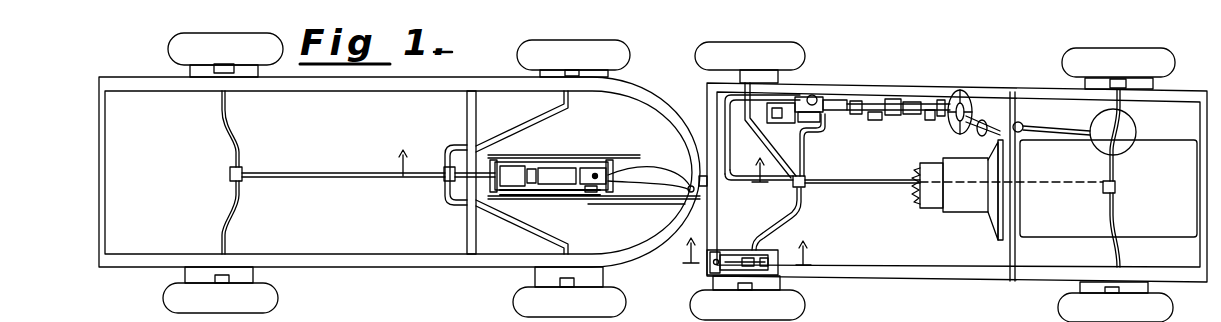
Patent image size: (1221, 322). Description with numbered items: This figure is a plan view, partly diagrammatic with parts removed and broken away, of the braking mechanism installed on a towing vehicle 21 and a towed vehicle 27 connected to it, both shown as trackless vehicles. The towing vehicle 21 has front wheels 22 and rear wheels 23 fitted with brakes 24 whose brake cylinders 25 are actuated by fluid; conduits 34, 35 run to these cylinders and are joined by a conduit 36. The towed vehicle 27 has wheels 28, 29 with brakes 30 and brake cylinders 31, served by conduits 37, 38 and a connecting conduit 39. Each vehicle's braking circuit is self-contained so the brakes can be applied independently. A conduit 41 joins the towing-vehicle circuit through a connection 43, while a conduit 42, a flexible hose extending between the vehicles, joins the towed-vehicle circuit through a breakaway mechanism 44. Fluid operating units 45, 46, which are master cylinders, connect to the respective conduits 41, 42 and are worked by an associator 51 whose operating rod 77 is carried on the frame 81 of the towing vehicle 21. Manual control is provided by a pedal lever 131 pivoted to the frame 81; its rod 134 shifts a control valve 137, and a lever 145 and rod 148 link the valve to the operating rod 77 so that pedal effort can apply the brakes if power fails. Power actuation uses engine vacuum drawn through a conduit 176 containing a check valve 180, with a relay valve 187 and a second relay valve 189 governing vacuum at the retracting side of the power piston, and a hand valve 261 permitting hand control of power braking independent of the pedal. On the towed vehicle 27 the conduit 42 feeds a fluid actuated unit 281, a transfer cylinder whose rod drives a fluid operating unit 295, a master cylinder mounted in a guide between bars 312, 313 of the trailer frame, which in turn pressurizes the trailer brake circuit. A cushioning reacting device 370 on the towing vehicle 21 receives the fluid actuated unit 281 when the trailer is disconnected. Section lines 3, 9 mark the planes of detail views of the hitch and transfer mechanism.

The section line 3- 3 is at (751, 243).
The section line 9- 9 is at (583, 162).
The towing vehicle 21 is at (1012, 77).
The front wheels 22 is at (1168, 58).
The rear wheels 23 is at (800, 58).
The brakes 24 is at (1153, 85).
The brake cylinders 25 is at (1130, 90).
The towed vehicle 27 is at (478, 80).
The wheels 28 is at (618, 60).
The wheels 29 is at (178, 48).
The brakes 30 is at (252, 74).
The brake cylinders 31 is at (218, 74).
The conduit 34 is at (1112, 251).
The conduit 35 is at (784, 210).
The conduit 36 is at (872, 186).
The conduit 37 is at (548, 236).
The conduit 38 is at (228, 220).
The conduit 39 is at (322, 182).
The conduit 41 is at (806, 180).
The conduit 42 is at (660, 162).
The connection 43 is at (805, 188).
The breakaway mechanism 44 is at (572, 160).
The fluid operating unit 45 is at (824, 124).
The fluid operating unit 46 is at (815, 96).
The associator 51 is at (775, 120).
The operating rod 77 is at (840, 100).
The frame 81 is at (916, 102).
The pedal lever 131 is at (984, 134).
The rod 134 is at (944, 124).
The control valve 137 is at (930, 122).
The lever 145 is at (962, 92).
The rod 148 is at (894, 116).
The conduit 176 is at (1072, 136).
The check valve 180 is at (1022, 133).
The relay valve 187 is at (875, 122).
The second relay valve 189 is at (893, 100).
The hand valve 261 is at (1013, 93).
The fluid actuated unit 281 is at (590, 192).
The fluid operating unit 295 is at (518, 166).
The bar 312 is at (556, 154).
The bar 313 is at (652, 205).
The cushioning reacting device 370 is at (760, 250).